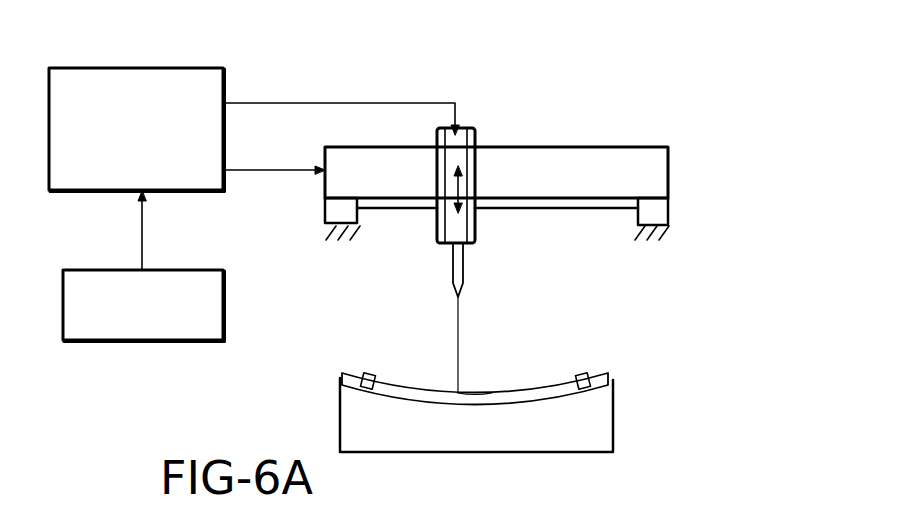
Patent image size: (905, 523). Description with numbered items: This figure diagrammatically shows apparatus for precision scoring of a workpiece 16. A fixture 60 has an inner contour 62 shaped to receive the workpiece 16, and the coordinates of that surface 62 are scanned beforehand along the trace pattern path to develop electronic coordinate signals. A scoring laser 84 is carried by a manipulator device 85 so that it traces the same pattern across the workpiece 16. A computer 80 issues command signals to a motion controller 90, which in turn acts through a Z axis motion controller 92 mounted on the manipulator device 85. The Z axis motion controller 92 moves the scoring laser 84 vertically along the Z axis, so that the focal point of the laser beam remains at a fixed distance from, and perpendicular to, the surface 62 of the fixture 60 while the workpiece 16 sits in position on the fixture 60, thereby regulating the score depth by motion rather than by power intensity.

The motion controller 90 is at (147, 69).
The computer 80 is at (223, 315).
The manipulator device 85 is at (668, 183).
The Z axis motion controller 92 is at (476, 139).
The scoring laser 84 is at (465, 268).
The fixture 60 is at (613, 418).
The workpiece 16 is at (530, 387).
The inner contour 62 is at (473, 392).